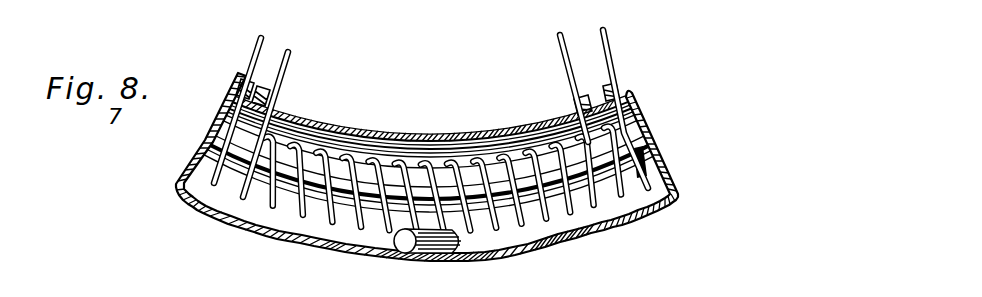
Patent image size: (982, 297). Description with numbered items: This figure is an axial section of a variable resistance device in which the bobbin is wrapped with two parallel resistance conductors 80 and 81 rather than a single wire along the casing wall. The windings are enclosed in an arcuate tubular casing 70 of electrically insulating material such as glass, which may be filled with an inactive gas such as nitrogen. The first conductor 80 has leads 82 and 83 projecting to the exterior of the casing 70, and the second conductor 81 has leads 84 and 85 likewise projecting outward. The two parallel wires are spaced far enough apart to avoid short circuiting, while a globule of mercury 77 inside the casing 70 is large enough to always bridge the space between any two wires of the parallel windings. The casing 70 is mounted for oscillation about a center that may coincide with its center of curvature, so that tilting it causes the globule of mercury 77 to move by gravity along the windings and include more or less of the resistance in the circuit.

The tubular casing 70 is at (561, 233).
The globule of mercury 77 is at (504, 174).
The parallel resistance conductor 80 is at (338, 138).
The parallel resistance conductor 81 is at (313, 135).
The lead 82 is at (258, 47).
The lead 83 is at (607, 46).
The lead 84 is at (287, 56).
The lead 85 is at (565, 52).